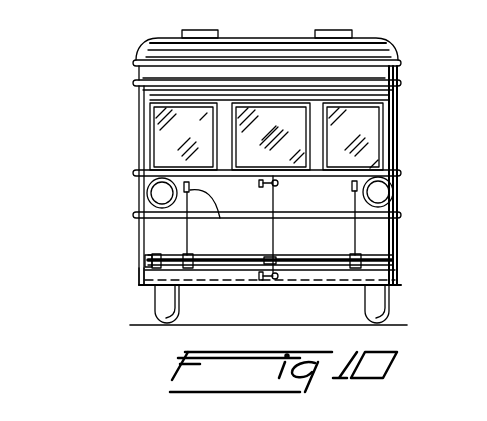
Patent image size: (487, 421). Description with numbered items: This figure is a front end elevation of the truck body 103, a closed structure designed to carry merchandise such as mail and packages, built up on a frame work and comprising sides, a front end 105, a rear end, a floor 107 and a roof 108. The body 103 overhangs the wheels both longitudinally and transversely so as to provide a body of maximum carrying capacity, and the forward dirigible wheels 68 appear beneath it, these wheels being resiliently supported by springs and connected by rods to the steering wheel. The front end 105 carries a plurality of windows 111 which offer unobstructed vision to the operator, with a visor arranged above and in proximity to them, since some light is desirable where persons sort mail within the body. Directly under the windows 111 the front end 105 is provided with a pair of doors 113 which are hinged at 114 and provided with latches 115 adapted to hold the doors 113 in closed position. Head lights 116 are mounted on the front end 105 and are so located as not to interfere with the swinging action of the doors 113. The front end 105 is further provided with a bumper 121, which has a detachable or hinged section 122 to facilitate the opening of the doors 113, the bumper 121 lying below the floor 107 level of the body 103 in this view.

The dirigible wheel 68 is at (186, 272).
The truck body 103 is at (383, 75).
The front end 105 is at (160, 77).
The floor 107 is at (321, 278).
The roof 108 is at (362, 50).
The windows 111 is at (338, 120).
The doors 113 is at (205, 233).
The hinges 114 is at (201, 274).
The latches 115 is at (353, 192).
The head lights 116 is at (158, 193).
The bumper 121 is at (165, 273).
The detachable or hinged section 122 is at (240, 268).